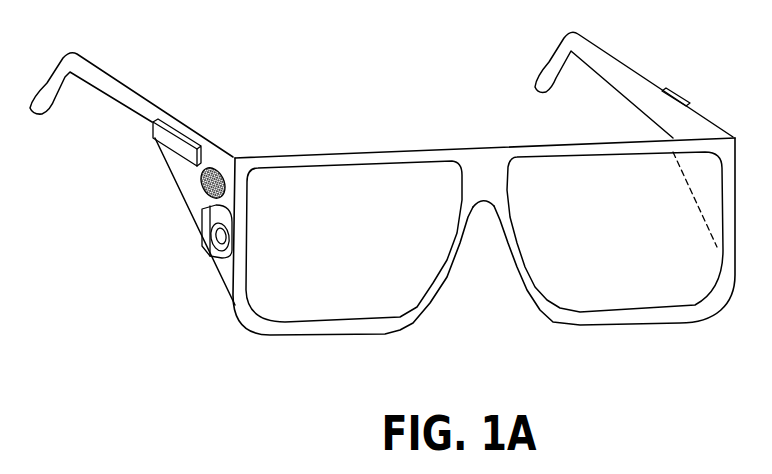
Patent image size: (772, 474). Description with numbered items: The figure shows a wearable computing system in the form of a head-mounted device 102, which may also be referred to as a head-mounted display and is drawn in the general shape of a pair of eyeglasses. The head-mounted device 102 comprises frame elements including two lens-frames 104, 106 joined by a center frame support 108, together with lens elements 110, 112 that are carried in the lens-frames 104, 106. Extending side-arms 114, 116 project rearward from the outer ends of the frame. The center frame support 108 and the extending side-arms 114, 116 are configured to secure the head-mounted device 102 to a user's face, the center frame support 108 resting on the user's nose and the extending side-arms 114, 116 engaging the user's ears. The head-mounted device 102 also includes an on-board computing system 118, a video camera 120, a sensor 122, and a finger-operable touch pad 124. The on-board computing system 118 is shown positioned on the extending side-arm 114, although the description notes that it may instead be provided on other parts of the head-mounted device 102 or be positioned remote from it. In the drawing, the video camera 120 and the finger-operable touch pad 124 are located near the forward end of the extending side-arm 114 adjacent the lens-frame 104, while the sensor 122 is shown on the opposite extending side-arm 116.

The head-mounted device 102 is at (333, 52).
The lens-frame 104 is at (327, 160).
The lens-frame 106 is at (562, 147).
The center frame support 108 is at (463, 162).
The lens element 110 is at (297, 302).
The lens element 112 is at (630, 292).
The extending side-arm 114 is at (172, 120).
The extending side-arm 116 is at (640, 73).
The on-board computing system 118 is at (170, 142).
The video camera 120 is at (203, 223).
The sensor 122 is at (677, 93).
The finger-operable touch pad 124 is at (202, 185).